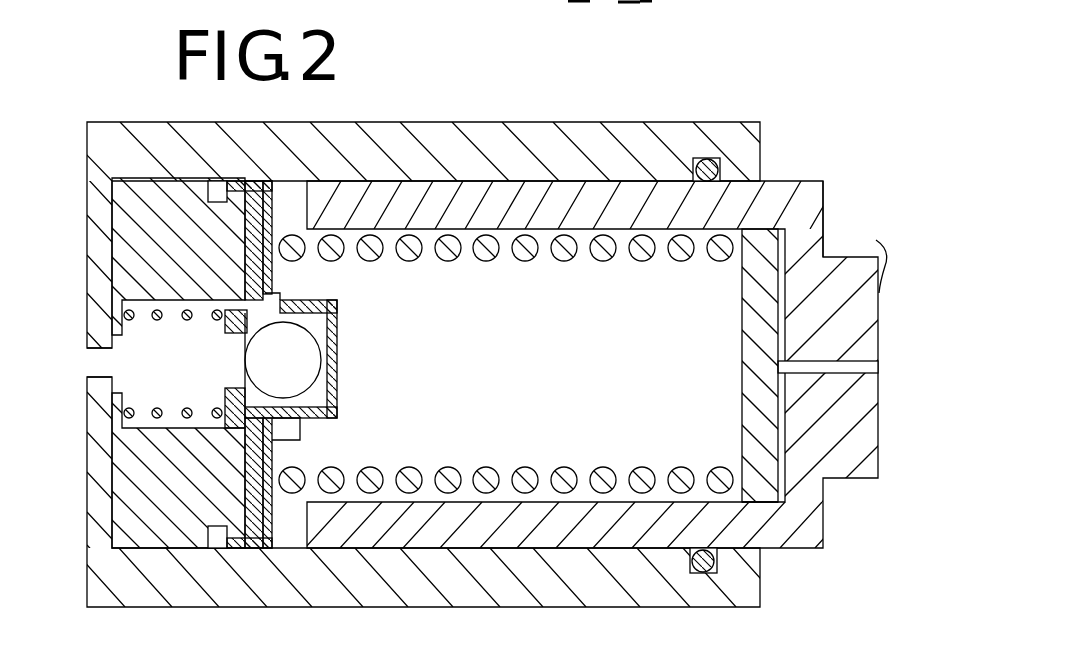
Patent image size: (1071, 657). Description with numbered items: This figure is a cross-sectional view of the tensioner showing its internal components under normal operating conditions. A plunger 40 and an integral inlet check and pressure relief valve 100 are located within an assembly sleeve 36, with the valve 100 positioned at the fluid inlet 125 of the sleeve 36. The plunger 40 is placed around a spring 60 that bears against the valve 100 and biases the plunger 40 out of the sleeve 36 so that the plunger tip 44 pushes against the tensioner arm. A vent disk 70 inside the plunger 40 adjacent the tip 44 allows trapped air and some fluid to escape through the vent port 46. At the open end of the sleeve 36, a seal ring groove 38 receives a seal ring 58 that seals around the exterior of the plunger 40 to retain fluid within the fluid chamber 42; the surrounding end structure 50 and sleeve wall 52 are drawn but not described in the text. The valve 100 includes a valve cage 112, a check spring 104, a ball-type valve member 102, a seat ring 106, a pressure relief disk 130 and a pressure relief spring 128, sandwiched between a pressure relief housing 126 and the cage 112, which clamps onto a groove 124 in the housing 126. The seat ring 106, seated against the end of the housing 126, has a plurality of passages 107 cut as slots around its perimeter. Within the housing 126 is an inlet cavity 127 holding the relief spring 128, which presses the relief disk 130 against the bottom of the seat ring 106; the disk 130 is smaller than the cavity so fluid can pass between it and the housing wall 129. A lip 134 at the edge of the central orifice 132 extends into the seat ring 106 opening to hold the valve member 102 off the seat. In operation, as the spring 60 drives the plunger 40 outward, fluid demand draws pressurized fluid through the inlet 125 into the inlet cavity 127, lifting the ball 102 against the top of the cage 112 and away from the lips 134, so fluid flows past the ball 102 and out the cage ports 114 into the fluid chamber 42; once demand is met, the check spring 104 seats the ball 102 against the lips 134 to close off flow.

The assembly sleeve 36 is at (447, 138).
The seal ring groove 38 is at (708, 160).
The plunger 40 is at (828, 270).
The fluid chamber 42 is at (668, 382).
The plunger tip 44 is at (867, 260).
The vent port 46 is at (787, 368).
The sleeve end flange 50 is at (812, 202).
The sleeve 52 is at (582, 182).
The seal ring 58 is at (718, 163).
The spring 60 is at (722, 478).
The vent disk 70 is at (765, 497).
The integral inlet check and pressure relief valve 100 is at (80, 312).
The valve member 102 is at (305, 358).
The check spring 104 is at (324, 388).
The seat ring 106 is at (252, 520).
The passages 107 is at (322, 411).
The valve cage 112 is at (272, 512).
The cage ports 114 is at (294, 422).
The groove 124 is at (212, 530).
The fluid inlet 125 is at (115, 357).
The pressure relief housing 126 is at (165, 512).
The inlet cavity 127 is at (150, 358).
The pressure relief spring 128 is at (125, 437).
The wall of the relief valve housing 129 is at (245, 297).
The pressure relief disk 130 is at (237, 420).
The orifice 132 is at (237, 362).
The lip 134 is at (237, 335).